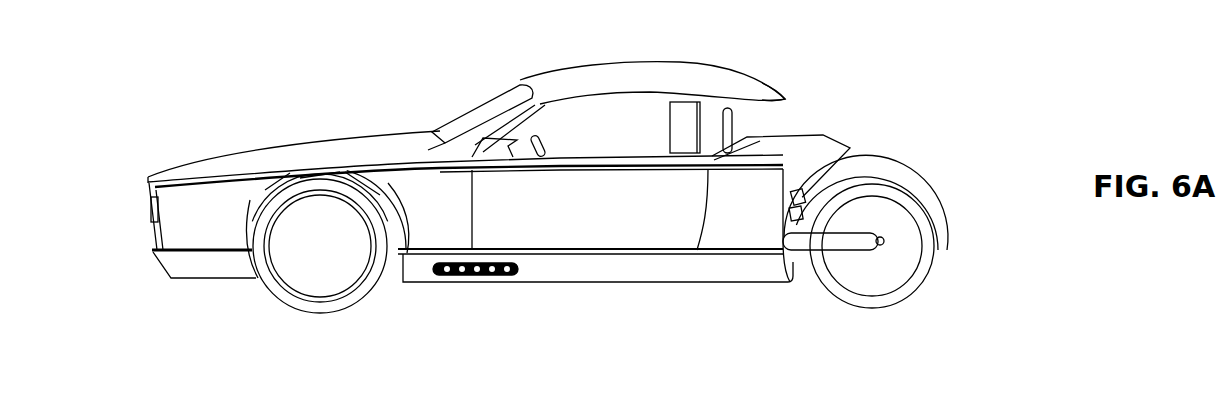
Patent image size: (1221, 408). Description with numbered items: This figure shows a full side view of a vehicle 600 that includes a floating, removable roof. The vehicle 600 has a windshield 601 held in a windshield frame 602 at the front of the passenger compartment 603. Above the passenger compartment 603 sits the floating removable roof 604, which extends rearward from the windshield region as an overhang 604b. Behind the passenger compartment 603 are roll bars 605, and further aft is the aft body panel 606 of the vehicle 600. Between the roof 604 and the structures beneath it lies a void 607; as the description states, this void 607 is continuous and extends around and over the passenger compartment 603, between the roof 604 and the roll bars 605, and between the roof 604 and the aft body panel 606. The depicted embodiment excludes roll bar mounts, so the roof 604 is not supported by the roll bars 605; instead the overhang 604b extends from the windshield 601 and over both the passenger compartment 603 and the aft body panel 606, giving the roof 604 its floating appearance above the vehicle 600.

The vehicle 600 is at (248, 317).
The windshield 601 is at (458, 112).
The windshield frame 602 is at (497, 113).
The passenger compartment 603 is at (599, 138).
The floating removable roof 604 is at (602, 63).
The overhang 604b is at (783, 94).
The roll bars 605 is at (733, 119).
The aft body panel 606 is at (827, 136).
The void 607 is at (658, 140).